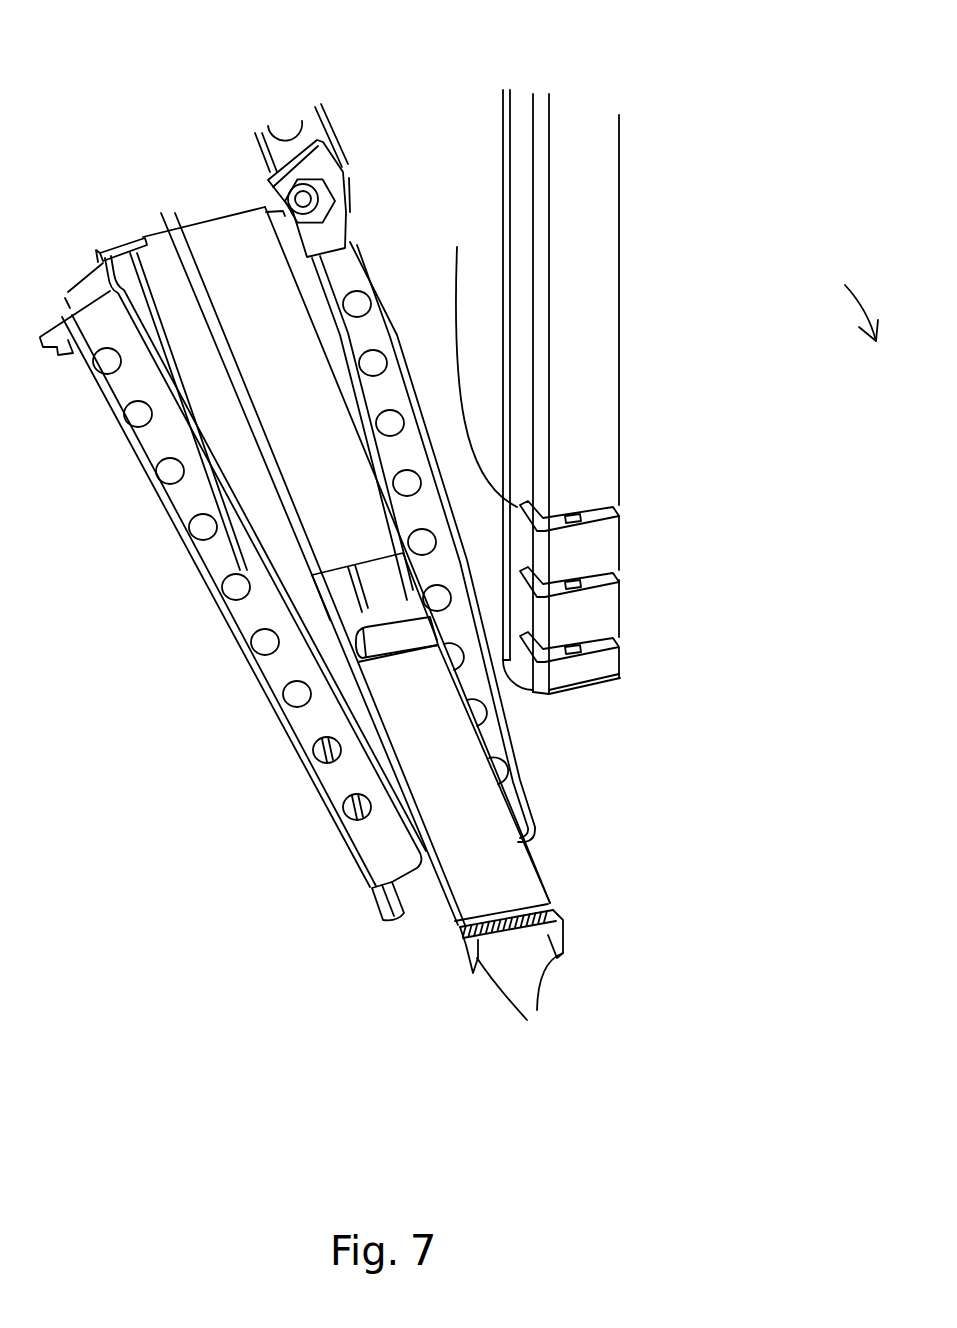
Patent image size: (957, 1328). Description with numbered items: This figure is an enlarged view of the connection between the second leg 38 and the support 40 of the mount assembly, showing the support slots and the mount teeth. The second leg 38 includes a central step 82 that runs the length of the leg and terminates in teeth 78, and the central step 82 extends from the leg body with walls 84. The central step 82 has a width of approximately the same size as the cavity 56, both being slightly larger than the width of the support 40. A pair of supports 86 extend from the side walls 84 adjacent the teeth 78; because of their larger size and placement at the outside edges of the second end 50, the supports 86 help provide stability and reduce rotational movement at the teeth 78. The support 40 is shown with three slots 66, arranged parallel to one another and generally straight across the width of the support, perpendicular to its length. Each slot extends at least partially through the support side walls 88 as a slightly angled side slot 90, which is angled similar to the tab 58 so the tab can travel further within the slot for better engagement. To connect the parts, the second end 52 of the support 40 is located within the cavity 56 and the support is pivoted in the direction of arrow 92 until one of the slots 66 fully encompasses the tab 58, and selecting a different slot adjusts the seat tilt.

The second leg 38 is at (148, 312).
The support 40 is at (585, 197).
The second end of the second leg 50 is at (473, 863).
The second end of the support 52 is at (587, 670).
The cavity 56 is at (345, 598).
The tab 58 is at (400, 629).
The slots 66 is at (618, 510).
The teeth 78 is at (543, 907).
The central step 82 is at (257, 323).
The walls 84 is at (228, 440).
The supports 86 is at (520, 1001).
The support side walls 88 is at (520, 397).
The angled side slot 90 is at (480, 363).
The arrow 92 is at (840, 301).